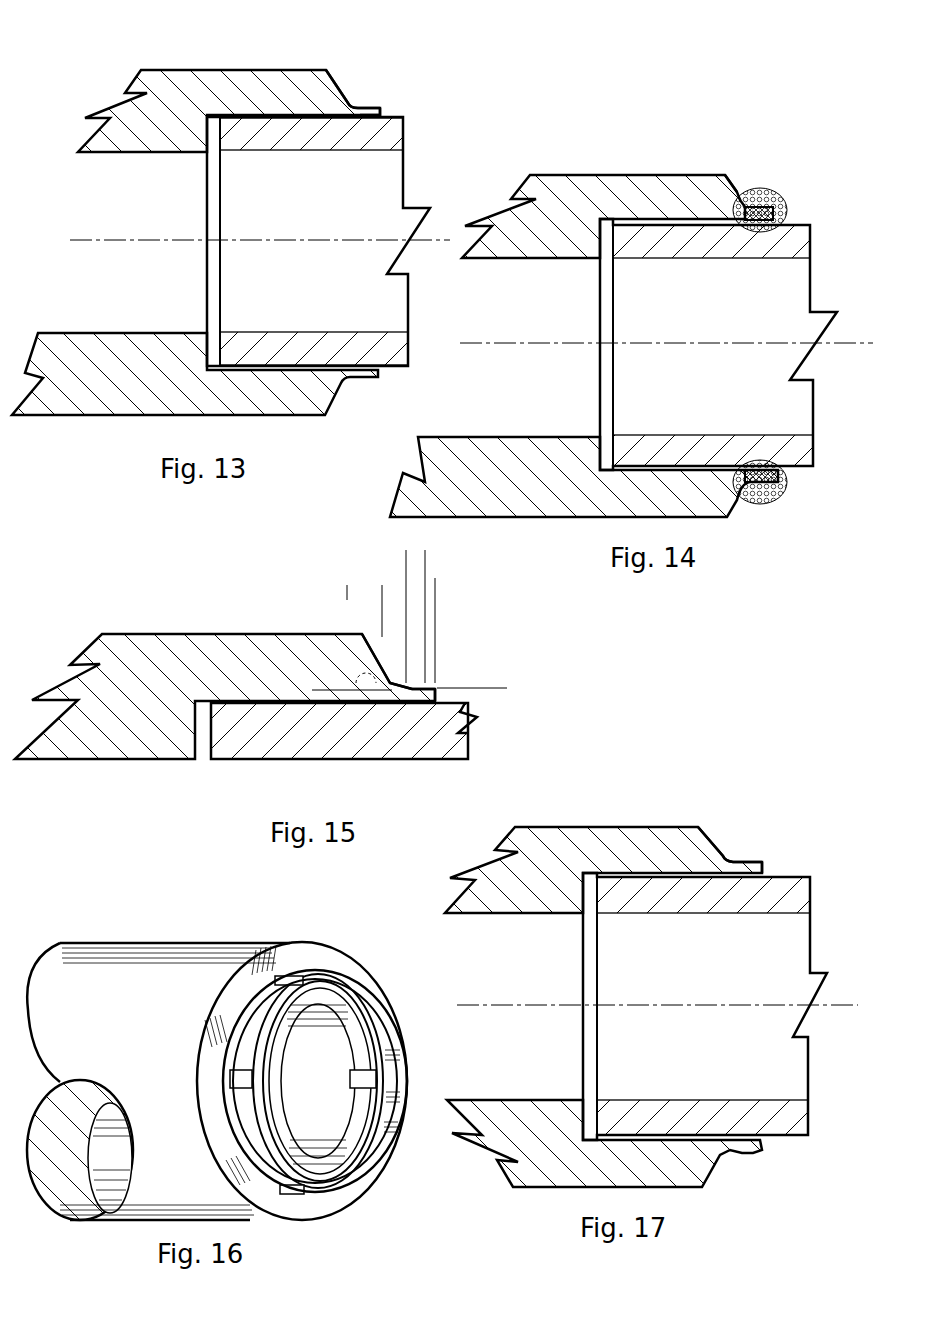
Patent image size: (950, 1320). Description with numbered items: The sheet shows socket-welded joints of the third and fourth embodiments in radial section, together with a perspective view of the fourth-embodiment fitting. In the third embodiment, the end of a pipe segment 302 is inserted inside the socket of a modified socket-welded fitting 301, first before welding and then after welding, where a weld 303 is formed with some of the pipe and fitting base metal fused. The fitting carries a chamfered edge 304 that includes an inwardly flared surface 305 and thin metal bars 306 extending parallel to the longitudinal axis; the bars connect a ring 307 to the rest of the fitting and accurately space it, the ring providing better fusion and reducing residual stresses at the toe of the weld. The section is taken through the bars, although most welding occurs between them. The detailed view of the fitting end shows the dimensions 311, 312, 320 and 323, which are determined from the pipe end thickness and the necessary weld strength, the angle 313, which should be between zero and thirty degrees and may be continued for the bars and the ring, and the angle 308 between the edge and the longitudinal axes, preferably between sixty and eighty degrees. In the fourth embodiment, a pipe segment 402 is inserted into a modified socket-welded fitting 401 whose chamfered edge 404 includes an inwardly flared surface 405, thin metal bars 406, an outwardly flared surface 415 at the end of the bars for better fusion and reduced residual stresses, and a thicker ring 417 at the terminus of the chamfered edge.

In FIG. 13, the socket-welded fitting 301 is at (160, 77).
In FIG. 14, the socket-welded fitting 301 is at (553, 182).
In FIG. 15, the socket-welded fitting 301 is at (190, 640).
In FIG. 13, the pipe segment 302 is at (393, 137).
In FIG. 14, the pipe segment 302 is at (797, 247).
In FIG. 15, the pipe segment 302 is at (462, 705).
In FIG. 14, the weld 303 is at (765, 192).
In FIG. 13, the chamfered edge 304 is at (332, 67).
In FIG. 14, the chamfered edge 304 is at (733, 172).
In FIG. 15, the chamfered edge 304 is at (372, 640).
In FIG. 13, the inwardly flared surface 305 is at (349, 98).
In FIG. 15, the inwardly flared surface 305 is at (397, 678).
In FIG. 13, the thin metal bars 306 is at (362, 100).
In FIG. 15, the thin metal bars 306 is at (418, 700).
In FIG. 13, the ring 307 is at (375, 107).
In FIG. 15, the ring 307 is at (433, 700).
In FIG. 15, the angle 308 is at (362, 665).
In FIG. 15, the dimension 311 is at (347, 592).
In FIG. 15, the dimension 312 is at (460, 688).
In FIG. 15, the angle 313 is at (335, 686).
In FIG. 15, the dimension 320 is at (425, 561).
In FIG. 15, the dimension 323 is at (347, 592).
In FIG. 16, the socket-welded fitting 401 is at (217, 1081).
In FIG. 17, the socket-welded fitting 401 is at (558, 832).
In FIG. 17, the pipe segment 402 is at (800, 893).
In FIG. 16, the chamfered edge 404 is at (292, 913).
In FIG. 17, the chamfered edge 404 is at (712, 838).
In FIG. 17, the inwardly flared surface 405 is at (727, 858).
In FIG. 16, the thin metal bars 406 is at (352, 1082).
In FIG. 17, the thin metal bars 406 is at (745, 858).
In FIG. 17, the outwardly flared surface 415 is at (747, 860).
In FIG. 16, the ring 417 is at (378, 1008).
In FIG. 17, the ring 417 is at (757, 860).